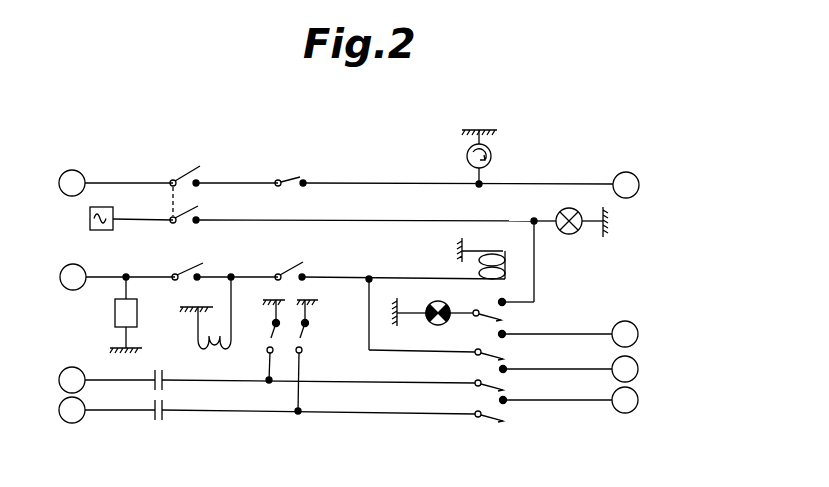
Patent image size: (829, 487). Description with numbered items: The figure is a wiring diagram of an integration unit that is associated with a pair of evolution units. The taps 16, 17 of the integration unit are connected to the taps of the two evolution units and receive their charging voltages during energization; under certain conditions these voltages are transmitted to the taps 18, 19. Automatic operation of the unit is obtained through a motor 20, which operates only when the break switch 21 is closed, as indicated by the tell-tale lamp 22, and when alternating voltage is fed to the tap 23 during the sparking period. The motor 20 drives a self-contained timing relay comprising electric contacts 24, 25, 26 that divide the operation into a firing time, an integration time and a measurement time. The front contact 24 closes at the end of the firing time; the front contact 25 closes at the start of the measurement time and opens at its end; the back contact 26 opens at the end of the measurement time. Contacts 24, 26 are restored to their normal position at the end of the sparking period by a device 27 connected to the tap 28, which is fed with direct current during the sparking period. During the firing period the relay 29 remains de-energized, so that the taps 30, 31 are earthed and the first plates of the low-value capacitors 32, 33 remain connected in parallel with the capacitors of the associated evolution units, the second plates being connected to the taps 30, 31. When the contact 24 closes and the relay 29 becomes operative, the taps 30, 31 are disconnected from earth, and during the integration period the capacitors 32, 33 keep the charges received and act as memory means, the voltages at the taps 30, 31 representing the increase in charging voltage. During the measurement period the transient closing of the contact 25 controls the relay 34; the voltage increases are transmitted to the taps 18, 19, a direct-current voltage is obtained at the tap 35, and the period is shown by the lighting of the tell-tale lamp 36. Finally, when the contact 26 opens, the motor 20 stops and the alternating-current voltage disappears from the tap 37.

The tap 16 is at (70, 367).
The tap 17 is at (72, 424).
The tap 18 is at (639, 368).
The tap 19 is at (625, 413).
The motor 20 is at (492, 155).
The break switch 21 is at (172, 201).
The tell-tale lamp 22 is at (577, 232).
The tap 23 is at (82, 172).
The front contact 24 is at (181, 271).
The front contact 25 is at (285, 270).
The back contact 26 is at (288, 177).
The device 27 is at (115, 314).
The tap 28 is at (68, 265).
The relay 29 is at (233, 332).
The tap 30 is at (271, 353).
The tap 31 is at (299, 413).
The capacitor 32 is at (164, 376).
The capacitor 33 is at (162, 419).
The relay 34 is at (492, 254).
The tap 35 is at (625, 321).
The tell-tale lamp 36 is at (441, 302).
The tap 37 is at (627, 172).